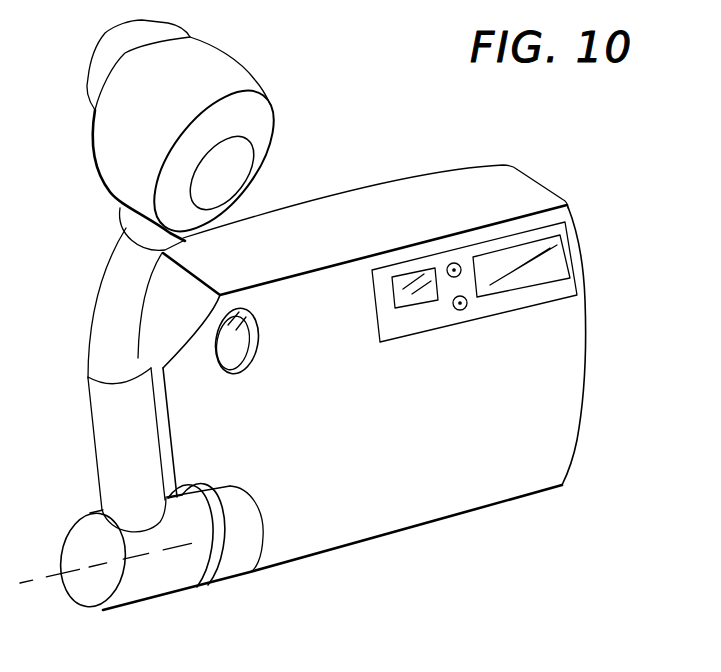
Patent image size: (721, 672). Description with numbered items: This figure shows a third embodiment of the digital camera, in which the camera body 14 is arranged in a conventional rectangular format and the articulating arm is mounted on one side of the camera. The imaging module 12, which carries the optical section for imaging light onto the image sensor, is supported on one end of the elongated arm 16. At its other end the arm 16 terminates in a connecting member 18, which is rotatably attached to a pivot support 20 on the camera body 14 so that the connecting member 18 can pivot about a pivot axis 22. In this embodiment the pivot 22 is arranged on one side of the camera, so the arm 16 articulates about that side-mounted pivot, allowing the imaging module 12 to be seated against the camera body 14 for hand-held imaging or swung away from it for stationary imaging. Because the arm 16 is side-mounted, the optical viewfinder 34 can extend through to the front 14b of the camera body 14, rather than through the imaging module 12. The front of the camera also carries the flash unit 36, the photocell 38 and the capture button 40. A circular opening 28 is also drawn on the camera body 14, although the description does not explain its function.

The camera head 12 is at (178, 82).
The housing 14 is at (450, 198).
The housing side wall 14b is at (535, 418).
The handle 16 is at (117, 445).
The cylindrical base 18 is at (152, 575).
The ring 20 is at (233, 558).
The axis 22 is at (20, 585).
The support arm 28 is at (107, 305).
The display window 34 is at (417, 307).
The display 36 is at (510, 292).
The control button 38 is at (460, 310).
The port 40 is at (235, 347).